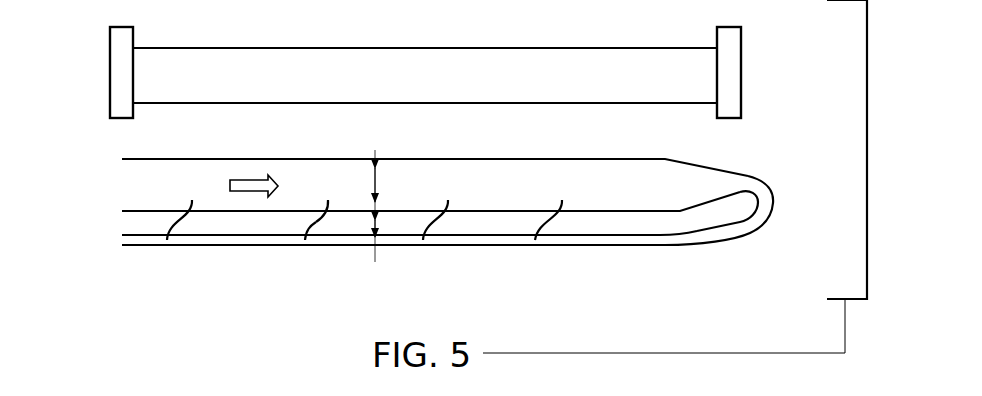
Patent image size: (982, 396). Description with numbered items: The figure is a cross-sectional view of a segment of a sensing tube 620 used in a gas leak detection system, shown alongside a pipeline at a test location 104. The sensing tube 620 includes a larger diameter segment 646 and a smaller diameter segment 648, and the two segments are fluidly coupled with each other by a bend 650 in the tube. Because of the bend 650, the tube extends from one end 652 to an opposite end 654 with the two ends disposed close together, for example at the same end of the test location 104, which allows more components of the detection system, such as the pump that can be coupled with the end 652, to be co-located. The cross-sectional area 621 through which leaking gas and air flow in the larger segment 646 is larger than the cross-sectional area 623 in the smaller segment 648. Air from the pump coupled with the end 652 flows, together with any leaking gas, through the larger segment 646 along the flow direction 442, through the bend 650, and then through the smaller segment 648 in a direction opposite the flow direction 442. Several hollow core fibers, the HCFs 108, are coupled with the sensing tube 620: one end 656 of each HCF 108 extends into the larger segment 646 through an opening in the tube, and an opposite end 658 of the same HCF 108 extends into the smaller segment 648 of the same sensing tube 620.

The test location 104 is at (783, 17).
The sensing tube 620 is at (441, 208).
The larger diameter segment 646 is at (90, 155).
The smaller diameter segment 648 is at (409, 236).
The bend 650 is at (765, 244).
The end 652 is at (122, 181).
The opposite end 654 is at (114, 241).
The flow direction 442 is at (255, 178).
The end of HCF 656 is at (318, 192).
The opposite end of HCF 658 is at (316, 250).
The HCF 108 is at (448, 222).
The cross-sectional area 621 is at (378, 185).
The cross-sectional area 623 is at (377, 238).